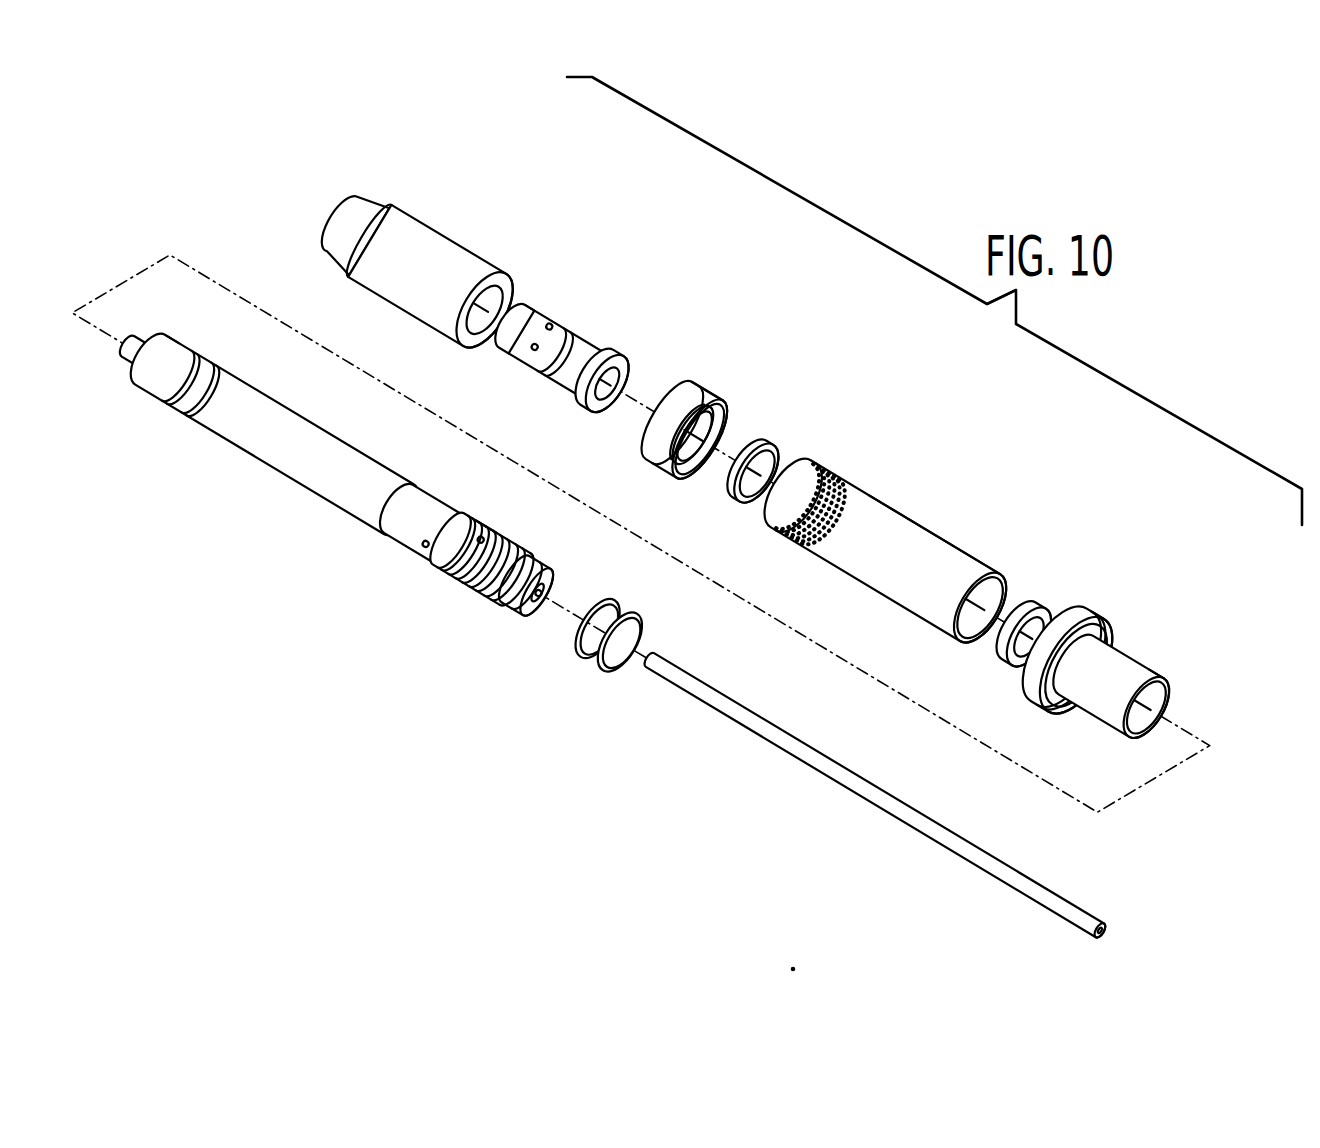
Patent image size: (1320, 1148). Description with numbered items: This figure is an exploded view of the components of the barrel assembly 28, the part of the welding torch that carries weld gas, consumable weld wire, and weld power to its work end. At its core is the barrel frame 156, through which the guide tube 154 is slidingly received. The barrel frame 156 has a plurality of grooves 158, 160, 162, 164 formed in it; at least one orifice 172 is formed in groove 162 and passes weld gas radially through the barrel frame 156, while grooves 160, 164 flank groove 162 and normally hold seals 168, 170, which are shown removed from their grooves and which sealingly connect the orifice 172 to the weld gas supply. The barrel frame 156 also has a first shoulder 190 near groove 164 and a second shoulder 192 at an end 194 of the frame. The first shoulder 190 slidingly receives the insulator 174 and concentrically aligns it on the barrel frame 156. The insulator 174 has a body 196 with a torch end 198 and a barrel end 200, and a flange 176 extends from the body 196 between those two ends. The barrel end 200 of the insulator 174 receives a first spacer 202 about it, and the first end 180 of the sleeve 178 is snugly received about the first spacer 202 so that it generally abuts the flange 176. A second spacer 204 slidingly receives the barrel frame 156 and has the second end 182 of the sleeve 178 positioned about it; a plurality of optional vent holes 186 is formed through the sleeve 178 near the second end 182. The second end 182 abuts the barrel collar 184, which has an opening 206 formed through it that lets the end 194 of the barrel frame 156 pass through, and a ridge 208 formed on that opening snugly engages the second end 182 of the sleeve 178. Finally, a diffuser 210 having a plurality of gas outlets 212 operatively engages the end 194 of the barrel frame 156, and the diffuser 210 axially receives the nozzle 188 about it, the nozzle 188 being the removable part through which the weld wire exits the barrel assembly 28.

The barrel assembly 28 is at (768, 315).
The guide tube 154 is at (812, 762).
The barrel frame 156 is at (278, 457).
The groove 158 is at (503, 613).
The groove 160 is at (480, 603).
The groove 162 is at (460, 593).
The groove 164 is at (447, 583).
The seal 168 is at (623, 667).
The seal 170 is at (580, 662).
The orifice 172 is at (487, 525).
The insulator 174 is at (1188, 562).
The flange 176 is at (1093, 617).
The sleeve 178 is at (943, 545).
The first end 180 is at (975, 540).
The second end 182 is at (875, 430).
The barrel collar 184 is at (674, 389).
The vent holes 186 is at (780, 548).
The nozzle 188 is at (408, 293).
The first shoulder 190 is at (410, 547).
The second shoulder 192 is at (150, 383).
The end 194 is at (167, 337).
The body 196 is at (1136, 652).
The torch end 198 is at (1180, 677).
The barrel end 200 is at (1053, 623).
The first spacer 202 is at (1027, 597).
The second spacer 204 is at (730, 497).
The opening 206 is at (654, 389).
The ridge 208 is at (693, 460).
The diffuser 210 is at (585, 347).
The gas outlets 212 is at (537, 345).